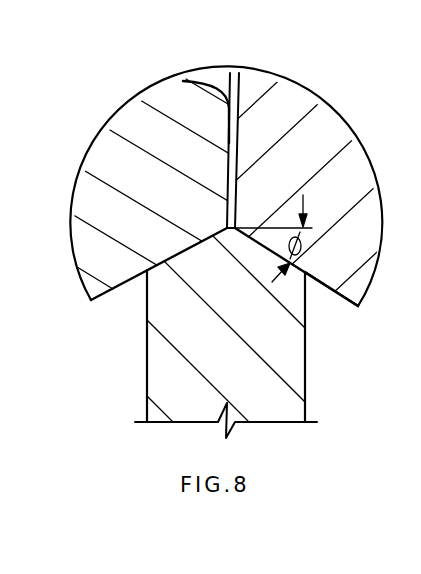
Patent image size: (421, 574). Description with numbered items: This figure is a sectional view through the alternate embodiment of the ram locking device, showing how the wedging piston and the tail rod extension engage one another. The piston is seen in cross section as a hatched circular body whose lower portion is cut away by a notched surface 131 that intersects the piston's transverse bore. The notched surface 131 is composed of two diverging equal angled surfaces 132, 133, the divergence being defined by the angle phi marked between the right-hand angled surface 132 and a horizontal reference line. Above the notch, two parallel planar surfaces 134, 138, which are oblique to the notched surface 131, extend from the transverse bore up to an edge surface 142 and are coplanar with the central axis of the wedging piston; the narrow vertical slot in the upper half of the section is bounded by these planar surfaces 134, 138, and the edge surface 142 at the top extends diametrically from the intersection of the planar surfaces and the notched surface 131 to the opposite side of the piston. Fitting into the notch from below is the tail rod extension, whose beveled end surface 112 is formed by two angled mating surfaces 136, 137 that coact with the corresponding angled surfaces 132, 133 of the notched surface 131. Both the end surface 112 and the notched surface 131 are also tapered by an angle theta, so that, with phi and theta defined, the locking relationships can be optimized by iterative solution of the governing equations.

The end surface 112 is at (212, 226).
The notched surface 131 is at (139, 284).
The angled surface 132 is at (343, 297).
The angled surface 133 is at (110, 290).
The planar surface 134 is at (240, 73).
The angled mating surface 136 is at (290, 263).
The angled mating surface 137 is at (80, 270).
The planar surface 138 is at (183, 81).
The edge surface 142 is at (233, 72).